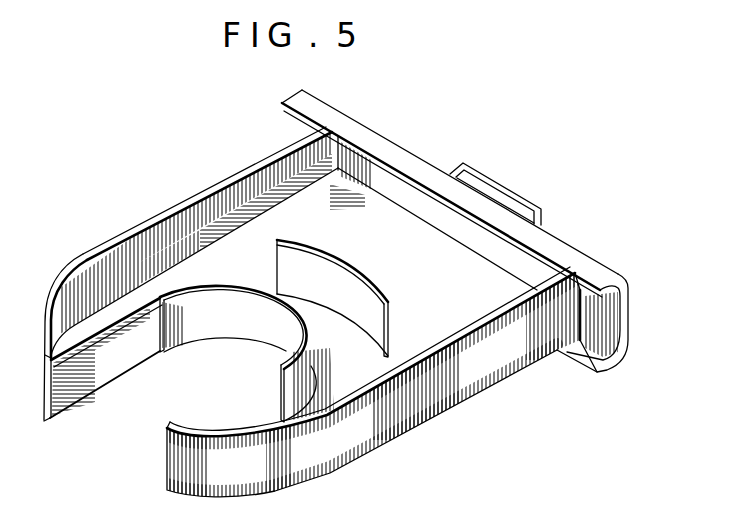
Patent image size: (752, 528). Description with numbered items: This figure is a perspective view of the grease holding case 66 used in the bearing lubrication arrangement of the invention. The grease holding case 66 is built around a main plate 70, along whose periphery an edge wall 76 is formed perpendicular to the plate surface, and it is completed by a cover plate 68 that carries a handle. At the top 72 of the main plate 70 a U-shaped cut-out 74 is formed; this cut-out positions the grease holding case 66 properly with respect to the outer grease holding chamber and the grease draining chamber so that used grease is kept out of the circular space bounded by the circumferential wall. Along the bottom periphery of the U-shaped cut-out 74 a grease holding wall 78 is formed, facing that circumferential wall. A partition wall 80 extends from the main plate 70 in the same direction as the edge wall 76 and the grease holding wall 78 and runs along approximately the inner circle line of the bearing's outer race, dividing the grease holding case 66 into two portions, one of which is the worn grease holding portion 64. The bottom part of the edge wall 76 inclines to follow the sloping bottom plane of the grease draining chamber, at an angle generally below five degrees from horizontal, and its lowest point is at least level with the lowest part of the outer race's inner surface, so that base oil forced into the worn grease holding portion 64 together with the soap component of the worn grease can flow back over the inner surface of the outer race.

The worn grease holding portion 64 is at (378, 203).
The grease holding case 66 is at (556, 463).
The cover plate 68 is at (632, 340).
The main plate 70 is at (195, 195).
The top of the main plate 72 is at (88, 387).
The U-shaped cut-out 74 is at (121, 378).
The edge wall 76 is at (88, 283).
The grease holding wall 78 is at (333, 420).
The partition wall 80 is at (295, 238).